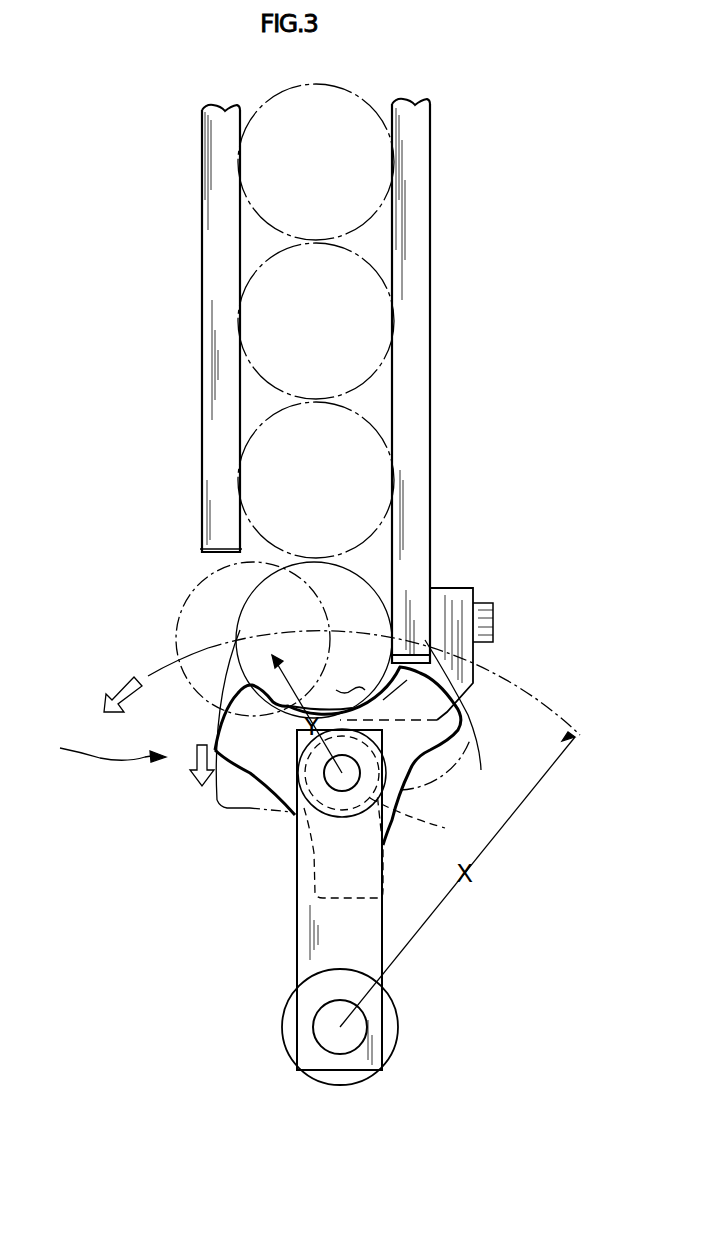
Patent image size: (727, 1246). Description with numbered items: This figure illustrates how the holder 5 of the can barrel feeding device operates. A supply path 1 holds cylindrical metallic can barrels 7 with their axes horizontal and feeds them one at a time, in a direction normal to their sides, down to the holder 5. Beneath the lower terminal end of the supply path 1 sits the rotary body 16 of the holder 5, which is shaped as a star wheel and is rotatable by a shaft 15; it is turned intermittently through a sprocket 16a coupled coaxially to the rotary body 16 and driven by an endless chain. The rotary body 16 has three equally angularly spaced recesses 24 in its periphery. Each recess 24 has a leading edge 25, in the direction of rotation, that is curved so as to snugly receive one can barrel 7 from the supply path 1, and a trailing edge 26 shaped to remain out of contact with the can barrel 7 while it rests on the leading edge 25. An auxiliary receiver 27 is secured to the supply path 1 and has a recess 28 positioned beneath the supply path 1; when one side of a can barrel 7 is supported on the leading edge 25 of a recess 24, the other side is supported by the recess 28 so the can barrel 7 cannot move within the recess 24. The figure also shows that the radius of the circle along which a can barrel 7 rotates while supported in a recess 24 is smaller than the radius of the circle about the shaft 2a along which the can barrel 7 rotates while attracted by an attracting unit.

The supply path 1 is at (468, 278).
The can barrel 7 is at (365, 415).
The recess 24 is at (310, 667).
The leading edge 25 is at (283, 712).
The trailing edge 26 is at (380, 668).
The recess of auxiliary receiver 28 is at (352, 692).
The auxiliary receiver 27 is at (465, 688).
The rotary body 16 is at (312, 898).
The sprocket 16a is at (431, 822).
The shaft 15 is at (380, 770).
The shaft 2a is at (382, 1010).
The holder 5 is at (102, 749).